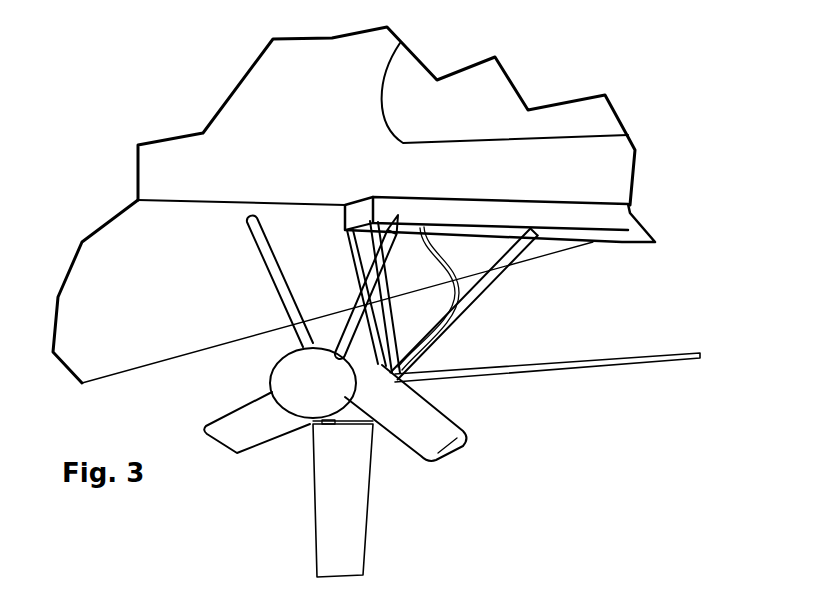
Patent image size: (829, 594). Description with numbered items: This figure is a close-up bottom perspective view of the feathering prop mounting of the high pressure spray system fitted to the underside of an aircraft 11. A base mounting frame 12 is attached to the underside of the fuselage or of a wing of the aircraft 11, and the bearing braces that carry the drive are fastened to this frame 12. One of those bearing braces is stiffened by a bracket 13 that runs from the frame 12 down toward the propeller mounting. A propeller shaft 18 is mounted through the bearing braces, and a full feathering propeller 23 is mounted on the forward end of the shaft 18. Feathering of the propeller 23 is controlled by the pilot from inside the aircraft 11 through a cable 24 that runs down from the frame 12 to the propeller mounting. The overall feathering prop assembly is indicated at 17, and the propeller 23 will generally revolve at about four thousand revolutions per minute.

The aircraft 11 is at (344, 202).
The base mounting frame 12 is at (543, 238).
The bracket 13 is at (565, 304).
The fan unit 17 is at (327, 387).
The propeller shaft 18 is at (547, 405).
The full feathering propeller 23 is at (397, 498).
The cable 24 is at (570, 298).